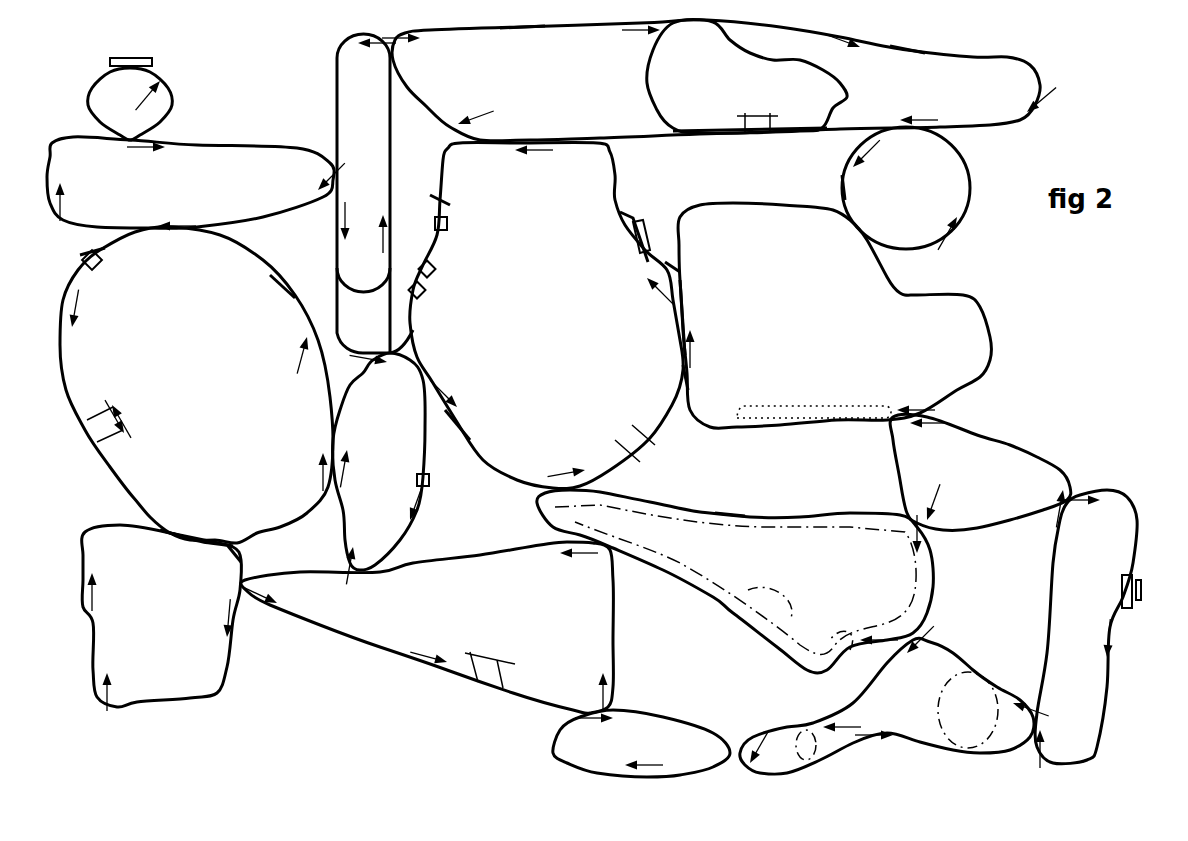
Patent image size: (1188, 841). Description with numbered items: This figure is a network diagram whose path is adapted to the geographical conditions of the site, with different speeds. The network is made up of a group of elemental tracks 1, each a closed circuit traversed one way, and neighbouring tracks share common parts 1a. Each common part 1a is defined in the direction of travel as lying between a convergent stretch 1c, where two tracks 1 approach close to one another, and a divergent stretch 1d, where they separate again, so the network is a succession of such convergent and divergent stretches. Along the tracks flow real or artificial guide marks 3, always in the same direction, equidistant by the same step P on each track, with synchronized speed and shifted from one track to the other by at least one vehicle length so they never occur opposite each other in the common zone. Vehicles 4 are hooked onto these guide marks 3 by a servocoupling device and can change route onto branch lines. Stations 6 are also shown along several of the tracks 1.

The elemental track 1 is at (973, 53).
The common part 1a is at (827, 143).
The convergent stretch 1c is at (687, 373).
The divergent stretch 1d is at (672, 263).
The guide mark 3 is at (523, 30).
The vehicle 4 is at (447, 223).
The station 6 is at (150, 58).
The step P is at (432, 391).